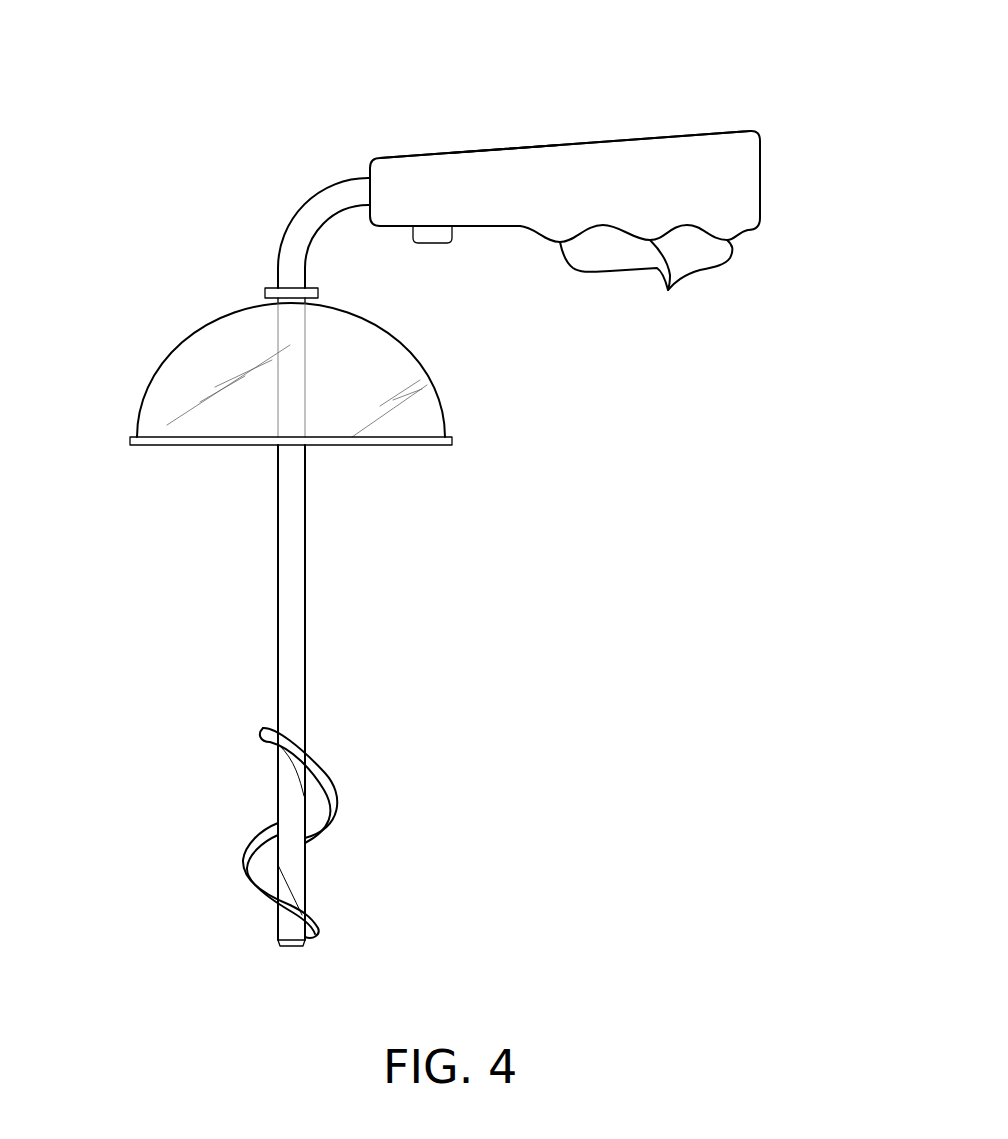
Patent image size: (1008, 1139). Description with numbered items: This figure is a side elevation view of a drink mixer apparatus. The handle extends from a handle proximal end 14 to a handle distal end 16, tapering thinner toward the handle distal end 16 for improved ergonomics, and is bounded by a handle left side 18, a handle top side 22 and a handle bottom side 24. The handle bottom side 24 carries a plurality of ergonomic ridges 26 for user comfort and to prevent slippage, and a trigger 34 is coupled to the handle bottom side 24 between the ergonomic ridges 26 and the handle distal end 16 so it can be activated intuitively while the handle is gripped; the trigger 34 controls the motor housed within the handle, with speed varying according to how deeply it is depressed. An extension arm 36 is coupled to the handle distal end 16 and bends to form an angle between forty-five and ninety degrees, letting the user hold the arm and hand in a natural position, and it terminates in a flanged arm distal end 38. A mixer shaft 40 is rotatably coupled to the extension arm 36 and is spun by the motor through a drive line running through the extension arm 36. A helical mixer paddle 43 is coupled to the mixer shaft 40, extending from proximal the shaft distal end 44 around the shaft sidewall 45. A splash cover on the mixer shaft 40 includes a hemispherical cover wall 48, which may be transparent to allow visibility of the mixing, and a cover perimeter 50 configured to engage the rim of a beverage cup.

The handle proximal end 14 is at (760, 173).
The handle distal end 16 is at (367, 170).
The handle left side 18 is at (507, 175).
The handle top side 22 is at (613, 142).
The handle bottom side 24 is at (505, 225).
The ergonomic ridges 26 is at (646, 286).
The trigger 34 is at (433, 243).
The extension arm 36 is at (285, 240).
The flanged arm distal end 38 is at (265, 293).
The mixer shaft 40 is at (305, 582).
The mixer paddle 43 is at (323, 793).
The shaft distal end 44 is at (293, 946).
The shaft sidewall 45 is at (285, 657).
The cover wall 48 is at (163, 380).
The cover perimeter 50 is at (407, 445).